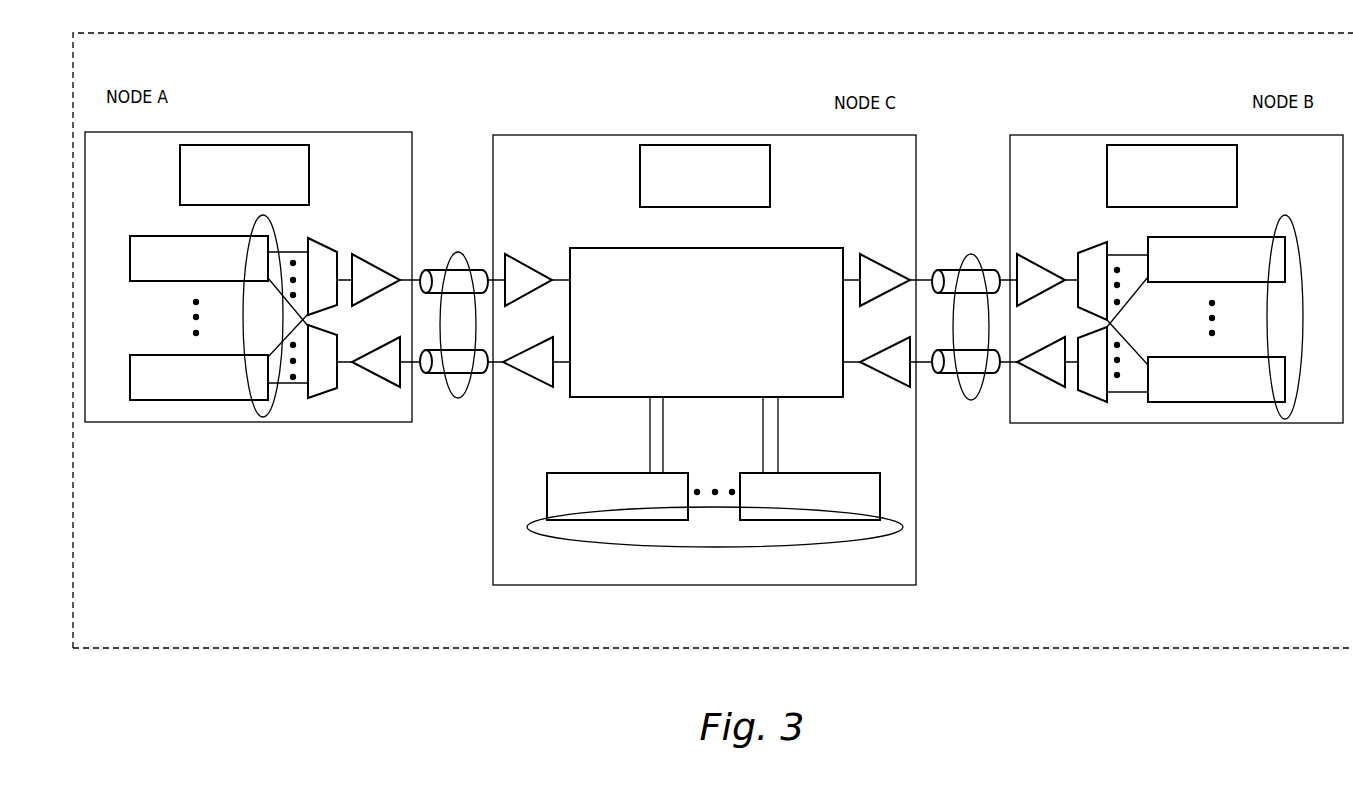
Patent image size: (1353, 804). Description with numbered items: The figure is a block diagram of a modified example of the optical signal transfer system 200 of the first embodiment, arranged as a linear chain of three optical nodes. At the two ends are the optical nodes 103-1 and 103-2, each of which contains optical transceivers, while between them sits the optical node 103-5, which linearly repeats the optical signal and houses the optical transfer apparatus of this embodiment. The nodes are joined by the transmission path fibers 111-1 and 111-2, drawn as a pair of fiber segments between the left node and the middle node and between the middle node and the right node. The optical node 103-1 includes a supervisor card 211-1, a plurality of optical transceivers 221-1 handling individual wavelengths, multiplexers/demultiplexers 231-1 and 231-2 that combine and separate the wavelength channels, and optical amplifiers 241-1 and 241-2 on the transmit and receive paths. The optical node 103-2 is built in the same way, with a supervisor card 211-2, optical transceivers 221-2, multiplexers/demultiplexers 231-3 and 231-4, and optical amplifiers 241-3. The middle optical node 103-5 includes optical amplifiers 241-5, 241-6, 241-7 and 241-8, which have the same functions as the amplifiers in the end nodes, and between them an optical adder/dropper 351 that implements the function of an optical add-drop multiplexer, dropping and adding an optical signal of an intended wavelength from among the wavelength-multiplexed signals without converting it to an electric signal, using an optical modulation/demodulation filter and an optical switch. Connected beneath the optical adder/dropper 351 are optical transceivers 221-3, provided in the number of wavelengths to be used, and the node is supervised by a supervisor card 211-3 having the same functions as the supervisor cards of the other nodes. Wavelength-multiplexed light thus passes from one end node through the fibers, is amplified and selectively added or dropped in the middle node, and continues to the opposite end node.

The optical signal transfer system 200 is at (1017, 648).
The optical node 103-1 is at (113, 422).
The optical node 103-2 is at (1293, 423).
The optical node 103-5 is at (667, 585).
The supervisor card 211-1 is at (200, 144).
The supervisor card 211-2 is at (1150, 145).
The supervisor card 211-3 is at (708, 145).
The optical transceivers 221-1 is at (262, 417).
The optical transceivers 221-2 is at (1267, 403).
The optical transceivers 221-3 is at (815, 541).
The multiplexer/demultiplexer 231-1 is at (333, 247).
The multiplexer/demultiplexer 231-2 is at (320, 398).
The multiplexer/demultiplexer 231-3 is at (1087, 247).
The multiplexer/demultiplexer 231-4 is at (1088, 393).
The optical amplifier 241-1 is at (377, 263).
The optical amplifier 241-2 is at (378, 388).
The optical amplifier 241-3 is at (1023, 257).
The optical amplifier 241-5 is at (513, 255).
The optical amplifier 241-6 is at (527, 373).
The optical amplifier 241-7 is at (885, 263).
The optical amplifier 241-8 is at (887, 383).
The optical adder/dropper 351 is at (580, 248).
The transmission path fiber 111-1 is at (457, 398).
The transmission path fiber 111-2 is at (968, 400).